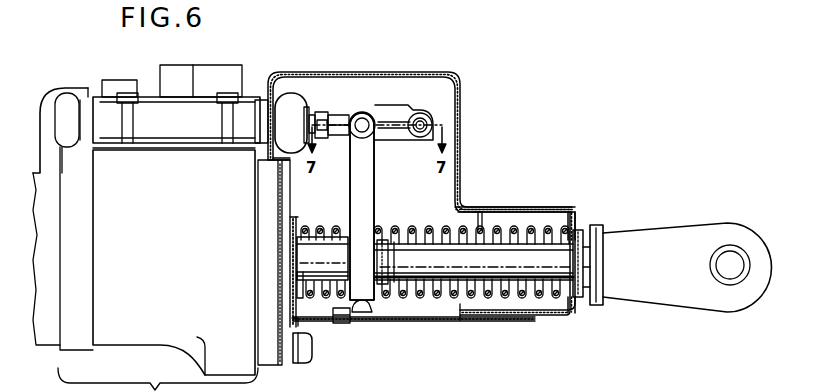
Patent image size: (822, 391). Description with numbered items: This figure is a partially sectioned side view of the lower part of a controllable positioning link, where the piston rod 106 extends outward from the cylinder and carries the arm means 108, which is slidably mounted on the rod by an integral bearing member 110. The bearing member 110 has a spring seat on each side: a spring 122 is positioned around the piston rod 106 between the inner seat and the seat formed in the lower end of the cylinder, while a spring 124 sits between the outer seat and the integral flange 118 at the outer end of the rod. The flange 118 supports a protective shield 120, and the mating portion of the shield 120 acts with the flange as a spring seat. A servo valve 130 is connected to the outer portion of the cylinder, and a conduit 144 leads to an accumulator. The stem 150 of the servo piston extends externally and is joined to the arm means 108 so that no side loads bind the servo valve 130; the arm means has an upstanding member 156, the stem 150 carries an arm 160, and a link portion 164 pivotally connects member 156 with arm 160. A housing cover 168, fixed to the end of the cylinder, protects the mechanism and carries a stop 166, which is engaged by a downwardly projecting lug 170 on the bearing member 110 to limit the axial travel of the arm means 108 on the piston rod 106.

The piston rod 106 is at (526, 266).
The arm means 108 is at (376, 190).
The integral bearing member 110 is at (316, 225).
The integral flange 118 is at (581, 298).
The protective shield 120 is at (560, 210).
The spring 122 is at (310, 296).
The spring 124 is at (478, 214).
The servo valve 130 is at (188, 127).
The conduit 144 is at (88, 53).
The stem 150 is at (313, 116).
The upstanding member 156 is at (375, 158).
The arm 160 is at (338, 120).
The link portion 164 is at (396, 112).
The stop 166 is at (372, 312).
The housing cover 168 is at (466, 107).
The lug 170 is at (357, 298).